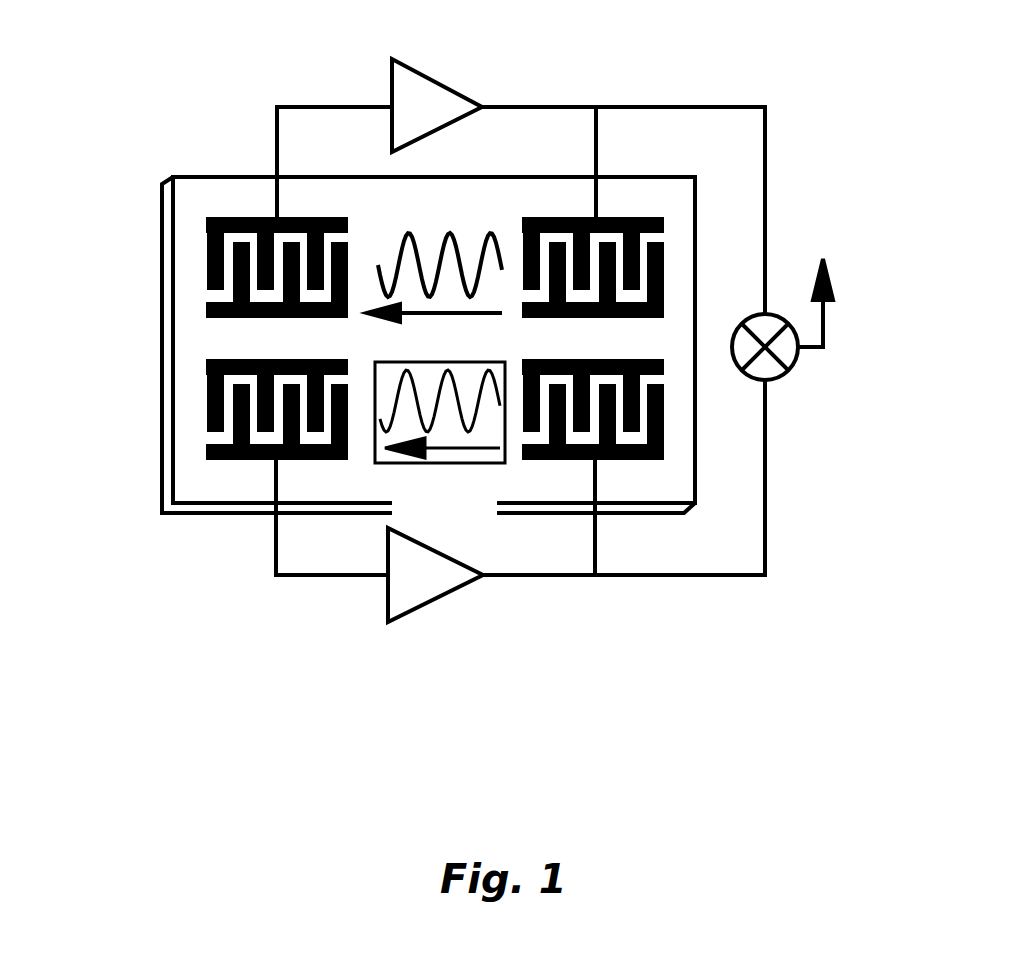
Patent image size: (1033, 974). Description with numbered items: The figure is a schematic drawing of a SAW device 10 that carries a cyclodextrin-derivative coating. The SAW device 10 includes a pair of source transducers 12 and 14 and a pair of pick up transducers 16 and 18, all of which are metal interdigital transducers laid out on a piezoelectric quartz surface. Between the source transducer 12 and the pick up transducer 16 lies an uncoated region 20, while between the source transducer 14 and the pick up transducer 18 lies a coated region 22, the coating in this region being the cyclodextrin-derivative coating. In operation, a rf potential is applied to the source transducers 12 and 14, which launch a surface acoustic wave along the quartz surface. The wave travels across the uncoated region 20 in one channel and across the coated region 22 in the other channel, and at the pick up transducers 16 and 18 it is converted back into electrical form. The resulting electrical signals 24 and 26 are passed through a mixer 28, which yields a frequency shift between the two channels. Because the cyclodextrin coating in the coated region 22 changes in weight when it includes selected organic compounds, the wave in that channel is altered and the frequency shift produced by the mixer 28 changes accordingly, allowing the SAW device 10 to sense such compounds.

The SAW device 10 is at (122, 90).
The source transducer 12 is at (648, 210).
The source transducer 14 is at (638, 492).
The pick up transducer 16 is at (240, 207).
The pick up transducer 18 is at (235, 473).
The uncoated region 20 is at (482, 230).
The coated region 22 is at (485, 438).
The electrical signal 24 is at (703, 95).
The electrical signal 26 is at (737, 590).
The mixer 28 is at (800, 363).